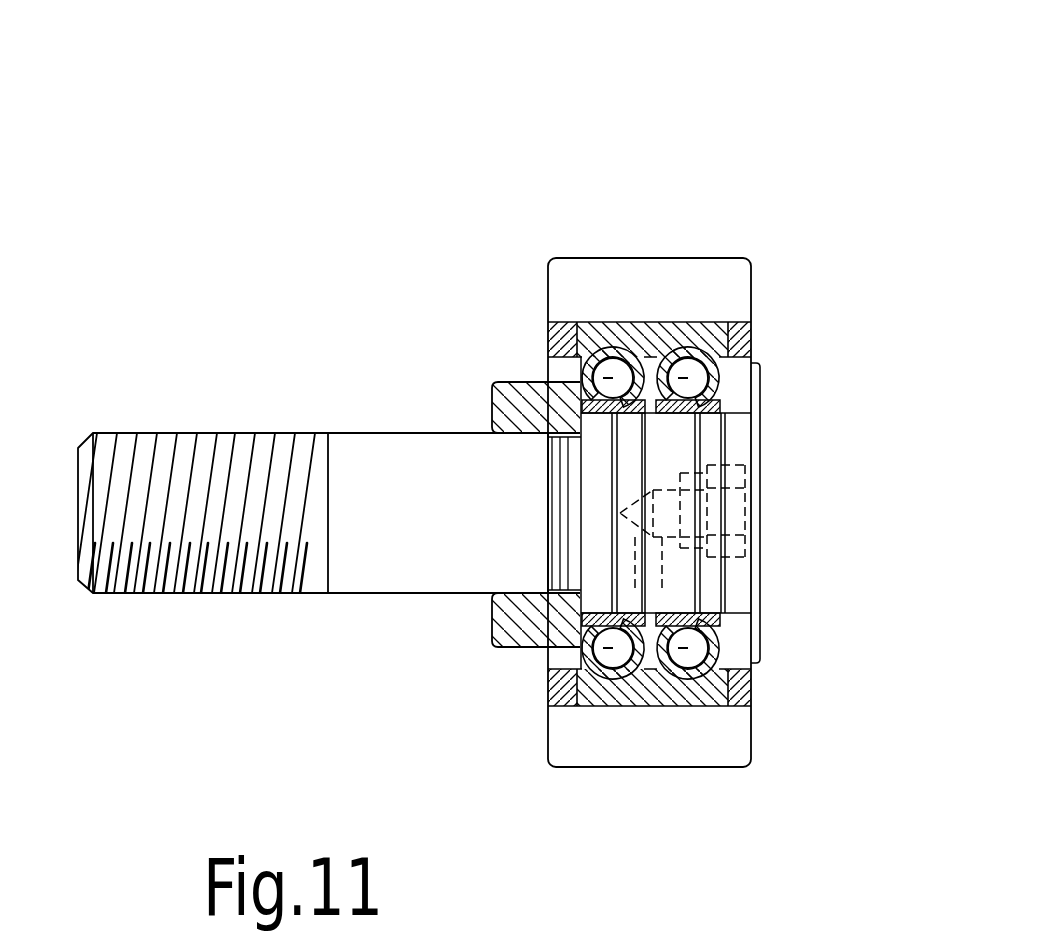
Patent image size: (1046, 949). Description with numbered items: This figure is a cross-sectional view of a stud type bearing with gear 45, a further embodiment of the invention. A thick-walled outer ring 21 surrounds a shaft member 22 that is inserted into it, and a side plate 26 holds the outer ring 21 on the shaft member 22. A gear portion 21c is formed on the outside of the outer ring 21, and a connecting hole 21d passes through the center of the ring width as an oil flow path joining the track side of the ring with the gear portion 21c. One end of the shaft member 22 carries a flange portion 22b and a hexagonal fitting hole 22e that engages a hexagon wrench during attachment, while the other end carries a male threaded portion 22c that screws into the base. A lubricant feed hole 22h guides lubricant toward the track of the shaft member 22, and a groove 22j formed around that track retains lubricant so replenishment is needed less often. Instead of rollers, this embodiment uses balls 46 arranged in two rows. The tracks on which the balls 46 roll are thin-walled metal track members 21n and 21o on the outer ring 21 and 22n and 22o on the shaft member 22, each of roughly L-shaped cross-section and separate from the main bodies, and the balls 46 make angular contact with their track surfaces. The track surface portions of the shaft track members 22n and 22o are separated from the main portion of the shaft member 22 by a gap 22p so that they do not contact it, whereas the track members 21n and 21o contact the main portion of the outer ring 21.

The stud type bearing with gear 45 is at (404, 160).
The outer ring 21 is at (571, 250).
The gear portion 21c is at (750, 284).
The connecting hole 21d is at (592, 322).
The track member 21n is at (618, 338).
The track member 21o is at (683, 328).
The shaft member 22 is at (348, 425).
The flange portion 22b is at (758, 650).
The male threaded portion 22c is at (207, 593).
The fitting hole 22e is at (745, 546).
The lubricant feed hole 22h is at (655, 706).
The groove for retaining lubricant 22j is at (695, 436).
The track member 22n is at (530, 402).
The track member 22o is at (700, 403).
The gap 22p is at (555, 640).
The side plate 26 is at (481, 632).
The balls 46 is at (610, 380).